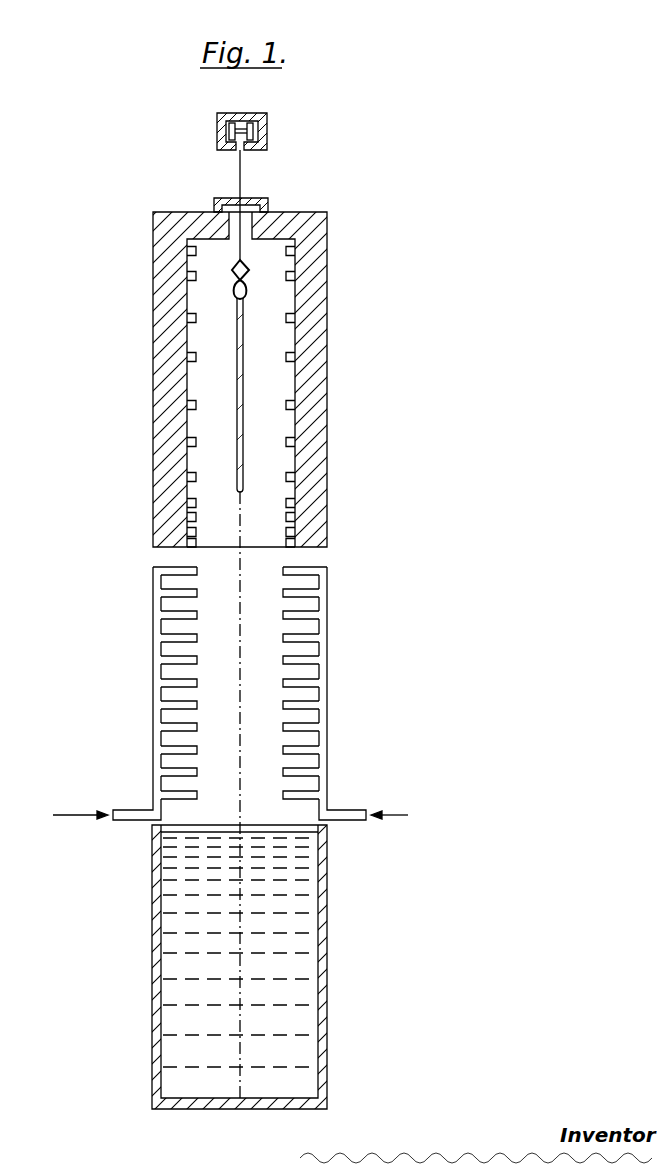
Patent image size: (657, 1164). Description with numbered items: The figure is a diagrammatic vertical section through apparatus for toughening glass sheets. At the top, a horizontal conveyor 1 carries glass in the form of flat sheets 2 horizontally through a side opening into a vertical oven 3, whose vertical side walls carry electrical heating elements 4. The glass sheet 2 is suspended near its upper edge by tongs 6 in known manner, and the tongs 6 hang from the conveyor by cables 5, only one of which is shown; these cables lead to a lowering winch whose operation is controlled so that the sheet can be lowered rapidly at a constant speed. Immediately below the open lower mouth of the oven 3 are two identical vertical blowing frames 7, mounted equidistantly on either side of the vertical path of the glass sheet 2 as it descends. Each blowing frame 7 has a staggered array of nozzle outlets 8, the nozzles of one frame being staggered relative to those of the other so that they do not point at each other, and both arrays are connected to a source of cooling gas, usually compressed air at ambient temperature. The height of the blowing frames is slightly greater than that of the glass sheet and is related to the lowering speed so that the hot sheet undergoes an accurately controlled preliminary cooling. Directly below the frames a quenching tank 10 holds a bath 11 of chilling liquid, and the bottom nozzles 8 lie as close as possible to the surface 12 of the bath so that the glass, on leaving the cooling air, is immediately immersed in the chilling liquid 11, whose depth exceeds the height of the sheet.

The horizontal conveyor 1 is at (268, 133).
The glass sheet 2 is at (237, 403).
The vertical oven 3 is at (313, 302).
The electrical heating elements 4 is at (295, 443).
The cables 5 is at (241, 181).
The tongs 6 is at (232, 271).
The blowing frames 7 is at (153, 670).
The nozzle outlets 8 is at (283, 681).
The quenching tank 10 is at (320, 965).
The bath of chilling liquid 11 is at (293, 1030).
The surface of the bath 12 is at (282, 827).